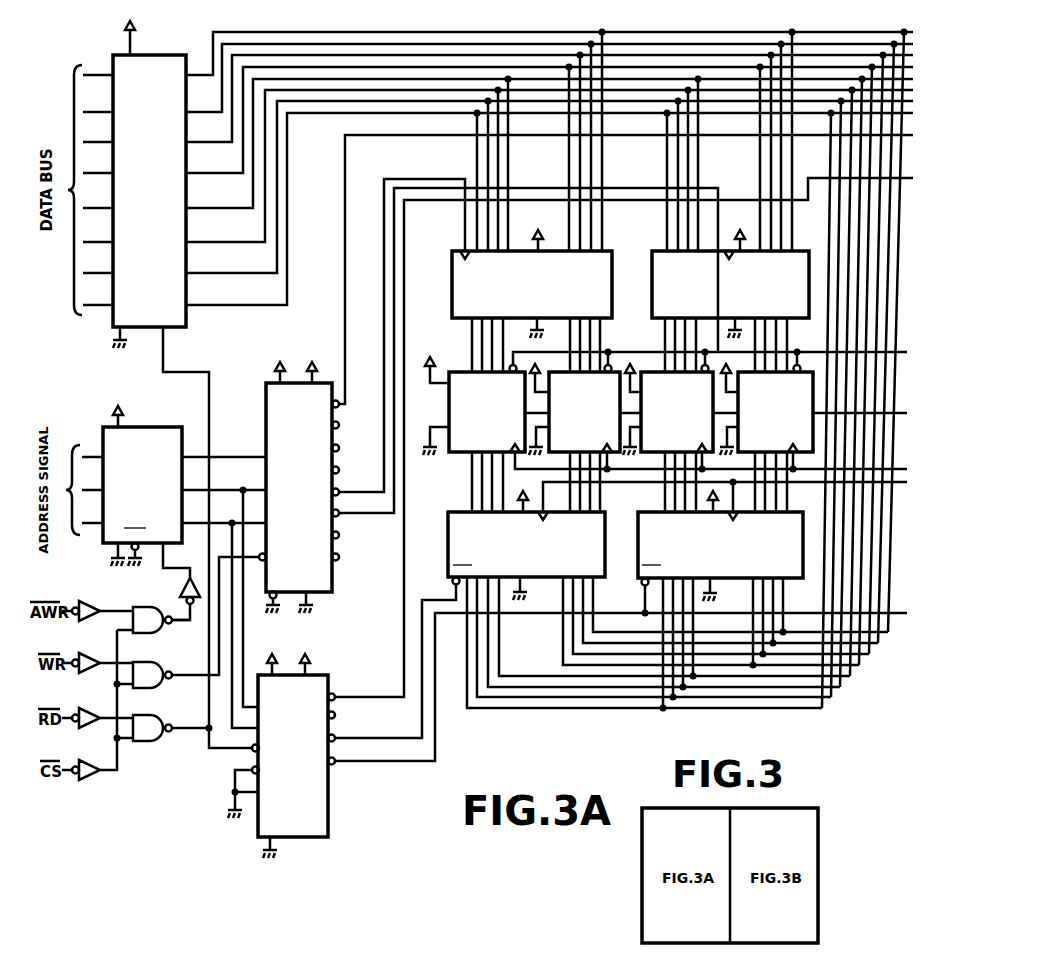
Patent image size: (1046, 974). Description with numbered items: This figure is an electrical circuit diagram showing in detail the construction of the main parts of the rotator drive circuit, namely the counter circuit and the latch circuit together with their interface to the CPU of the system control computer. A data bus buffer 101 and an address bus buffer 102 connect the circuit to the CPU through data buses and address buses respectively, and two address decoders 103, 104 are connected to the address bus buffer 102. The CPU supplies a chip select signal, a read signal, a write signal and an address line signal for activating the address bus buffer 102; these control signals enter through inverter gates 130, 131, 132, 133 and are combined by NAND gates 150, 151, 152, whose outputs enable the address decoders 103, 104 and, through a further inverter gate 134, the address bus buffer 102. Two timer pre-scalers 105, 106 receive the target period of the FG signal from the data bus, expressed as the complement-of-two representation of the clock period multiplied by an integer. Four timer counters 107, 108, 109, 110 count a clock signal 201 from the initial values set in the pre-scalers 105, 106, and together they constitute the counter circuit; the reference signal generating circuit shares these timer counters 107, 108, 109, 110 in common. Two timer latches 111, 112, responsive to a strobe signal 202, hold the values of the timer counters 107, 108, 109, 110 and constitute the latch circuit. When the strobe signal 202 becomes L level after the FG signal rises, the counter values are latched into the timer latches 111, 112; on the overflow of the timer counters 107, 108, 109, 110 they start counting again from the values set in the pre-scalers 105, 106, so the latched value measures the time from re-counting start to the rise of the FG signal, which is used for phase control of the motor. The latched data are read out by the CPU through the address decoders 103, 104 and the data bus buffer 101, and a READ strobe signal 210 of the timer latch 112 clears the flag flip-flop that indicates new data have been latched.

The data bus buffer 101 is at (167, 52).
The address bus buffer 102 is at (160, 427).
The address decoder 103 is at (266, 404).
The address decoder 104 is at (330, 688).
The timer pre-scaler 105 is at (610, 261).
The timer pre-scaler 106 is at (792, 251).
The timer counter 107 is at (457, 369).
The timer counter 108 is at (614, 360).
The timer counter 109 is at (707, 360).
The timer counter 110 is at (798, 360).
The timer latch 111 is at (448, 540).
The timer latch 112 is at (800, 565).
The inverter gate 130 is at (95, 622).
The inverter gate 131 is at (95, 674).
The inverter gate 132 is at (95, 729).
The inverter gate 133 is at (95, 781).
The inverter gate 134 is at (180, 592).
The NAND gate 150 is at (155, 633).
The NAND gate 151 is at (155, 688).
The NAND gate 152 is at (152, 741).
The clock signal 201 is at (632, 471).
The strobe signal 202 is at (818, 482).
The READ strobe signal 210 is at (637, 611).